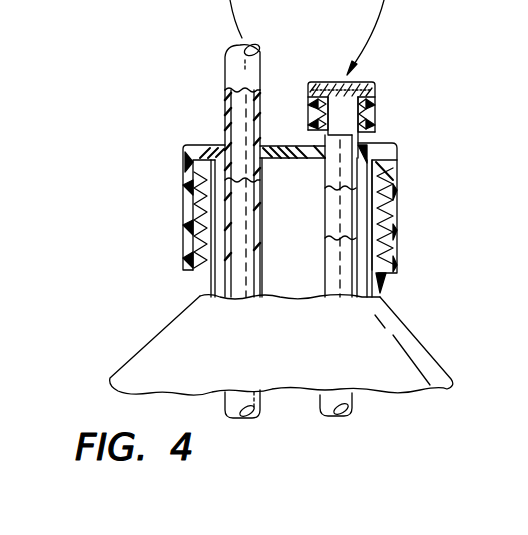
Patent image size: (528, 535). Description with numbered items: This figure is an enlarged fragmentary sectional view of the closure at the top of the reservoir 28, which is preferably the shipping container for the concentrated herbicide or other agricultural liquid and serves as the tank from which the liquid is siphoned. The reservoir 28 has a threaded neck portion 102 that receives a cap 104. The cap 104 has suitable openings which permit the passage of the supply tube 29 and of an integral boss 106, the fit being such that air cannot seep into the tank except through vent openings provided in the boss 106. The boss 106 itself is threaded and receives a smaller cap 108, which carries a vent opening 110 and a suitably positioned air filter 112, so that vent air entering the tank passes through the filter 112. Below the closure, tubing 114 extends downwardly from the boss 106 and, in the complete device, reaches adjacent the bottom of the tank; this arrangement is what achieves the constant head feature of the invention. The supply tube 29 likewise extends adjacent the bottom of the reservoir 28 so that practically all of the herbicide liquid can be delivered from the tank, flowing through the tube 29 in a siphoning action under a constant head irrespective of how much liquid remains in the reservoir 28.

The reservoir 28 is at (150, 348).
The tube 29 is at (228, 75).
The threaded neck portion 102 is at (378, 283).
The cap 104 is at (393, 215).
The integral boss 106 is at (360, 137).
The cap 108 is at (375, 103).
The vent opening 110 is at (355, 80).
The air filter 112 is at (334, 88).
The tubing 114 is at (326, 284).